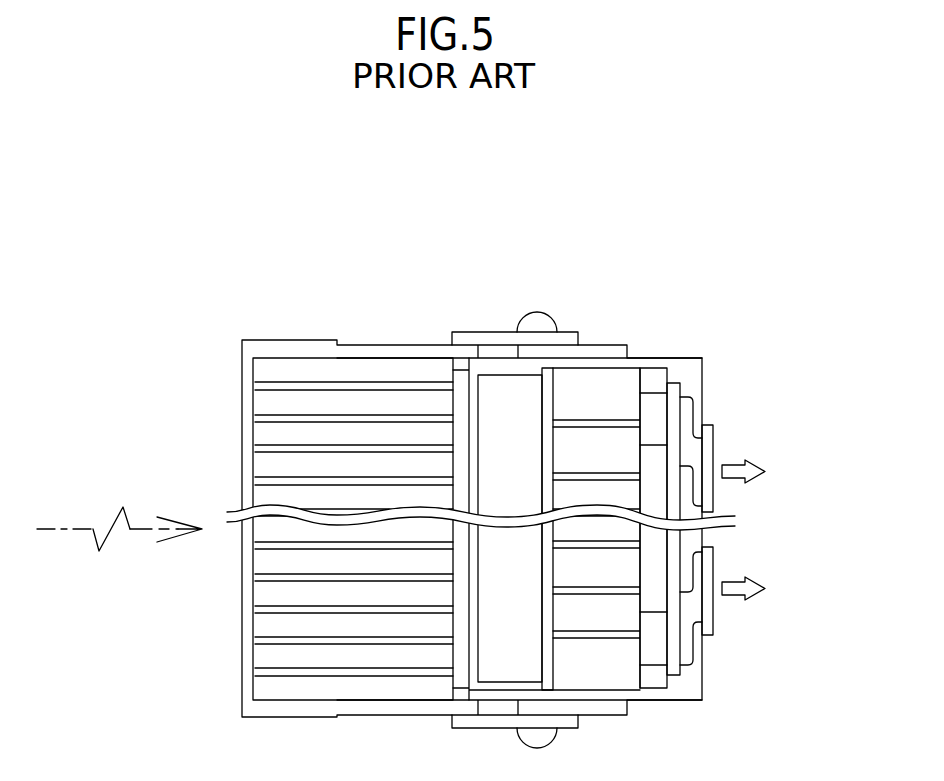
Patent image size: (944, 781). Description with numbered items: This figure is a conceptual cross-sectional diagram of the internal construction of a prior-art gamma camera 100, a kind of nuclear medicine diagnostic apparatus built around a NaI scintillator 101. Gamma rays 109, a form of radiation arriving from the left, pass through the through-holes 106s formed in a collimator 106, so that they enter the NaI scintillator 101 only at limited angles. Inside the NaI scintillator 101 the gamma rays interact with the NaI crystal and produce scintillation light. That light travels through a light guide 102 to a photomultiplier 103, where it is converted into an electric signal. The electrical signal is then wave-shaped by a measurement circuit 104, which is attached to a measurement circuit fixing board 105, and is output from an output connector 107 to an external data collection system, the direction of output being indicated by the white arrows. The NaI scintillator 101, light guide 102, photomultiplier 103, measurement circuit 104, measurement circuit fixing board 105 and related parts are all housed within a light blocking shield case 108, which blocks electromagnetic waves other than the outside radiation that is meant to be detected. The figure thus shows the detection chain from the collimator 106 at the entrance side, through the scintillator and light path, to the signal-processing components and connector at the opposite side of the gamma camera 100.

The gamma camera 100 is at (510, 191).
The NaI scintillator 101 is at (507, 386).
The light guide 102 is at (548, 385).
The photomultiplier 103 is at (603, 385).
The measurement circuit 104 is at (692, 448).
The measurement circuit fixing board 105 is at (657, 373).
The collimator 106 is at (285, 395).
The through-holes 106s is at (380, 420).
The output connector 107 is at (713, 612).
The light blocking shield case 108 is at (703, 683).
The gamma rays 109 is at (118, 516).